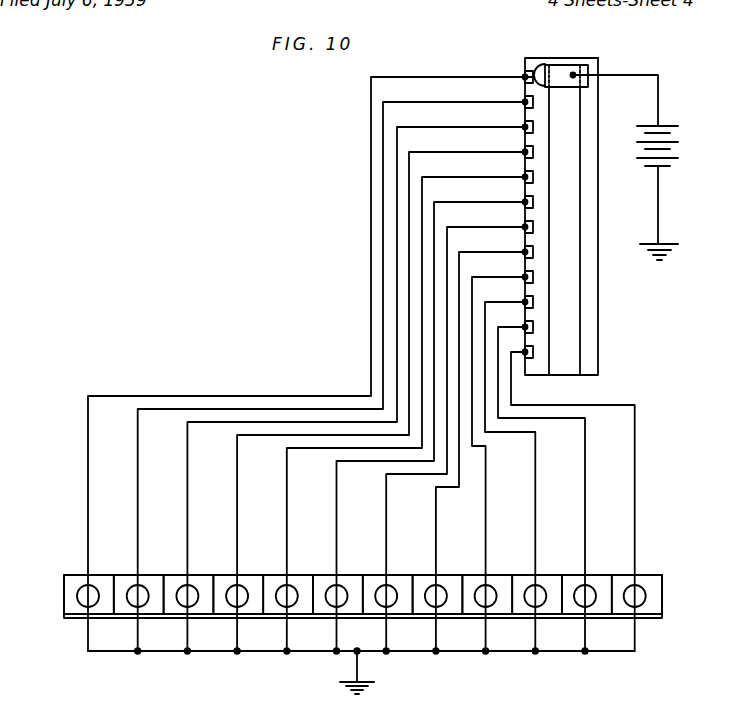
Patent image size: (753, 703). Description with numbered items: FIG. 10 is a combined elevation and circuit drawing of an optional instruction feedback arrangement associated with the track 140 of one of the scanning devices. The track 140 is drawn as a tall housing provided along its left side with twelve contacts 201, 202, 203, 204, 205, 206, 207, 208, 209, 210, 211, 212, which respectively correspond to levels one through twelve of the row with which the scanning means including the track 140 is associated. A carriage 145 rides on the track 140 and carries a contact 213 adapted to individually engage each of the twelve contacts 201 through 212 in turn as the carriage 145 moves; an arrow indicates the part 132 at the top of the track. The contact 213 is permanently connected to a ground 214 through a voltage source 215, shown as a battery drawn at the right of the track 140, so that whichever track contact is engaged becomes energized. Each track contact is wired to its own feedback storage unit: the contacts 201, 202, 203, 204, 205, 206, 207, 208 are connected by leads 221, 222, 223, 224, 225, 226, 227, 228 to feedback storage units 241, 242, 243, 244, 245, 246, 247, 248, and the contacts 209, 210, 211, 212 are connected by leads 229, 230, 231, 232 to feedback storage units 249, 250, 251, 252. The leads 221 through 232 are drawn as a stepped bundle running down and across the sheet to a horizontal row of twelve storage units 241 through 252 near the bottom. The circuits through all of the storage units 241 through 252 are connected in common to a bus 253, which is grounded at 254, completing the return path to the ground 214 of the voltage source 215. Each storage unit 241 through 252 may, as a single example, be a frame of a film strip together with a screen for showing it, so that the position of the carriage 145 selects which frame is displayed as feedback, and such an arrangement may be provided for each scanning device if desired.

The commutator shaft 132 is at (575, 62).
The track 140 is at (600, 203).
The carriage 145 is at (555, 68).
The contact 201 is at (525, 77).
The contact 202 is at (525, 102).
The contact 203 is at (525, 128).
The contact 204 is at (525, 152).
The contact 205 is at (525, 177).
The contact 206 is at (525, 202).
The contact 207 is at (525, 228).
The contact 208 is at (525, 253).
The contact 209 is at (525, 277).
The contact 210 is at (525, 302).
The contact 211 is at (525, 327).
The contact 212 is at (525, 352).
The contact 213 is at (540, 63).
The ground 214 is at (667, 243).
The voltage source 215 is at (668, 125).
The lead 221 is at (371, 90).
The lead 222 is at (383, 115).
The lead 223 is at (397, 141).
The lead 224 is at (409, 169).
The lead 225 is at (422, 195).
The lead 226 is at (434, 218).
The lead 227 is at (447, 237).
The lead 228 is at (459, 265).
The lead 229 is at (486, 480).
The lead 230 is at (535, 480).
The lead 231 is at (585, 457).
The lead 232 is at (635, 448).
The feedback storage unit 241 is at (73, 575).
The feedback storage unit 242 is at (122, 575).
The feedback storage unit 243 is at (175, 575).
The feedback storage unit 244 is at (223, 575).
The feedback storage unit 245 is at (273, 575).
The feedback storage unit 246 is at (320, 575).
The feedback storage unit 247 is at (378, 558).
The feedback storage unit 248 is at (418, 575).
The feedback storage unit 249 is at (470, 575).
The feedback storage unit 250 is at (520, 575).
The feedback storage unit 251 is at (570, 575).
The feedback storage unit 252 is at (622, 575).
The bus 253 is at (252, 654).
The ground 254 is at (367, 682).